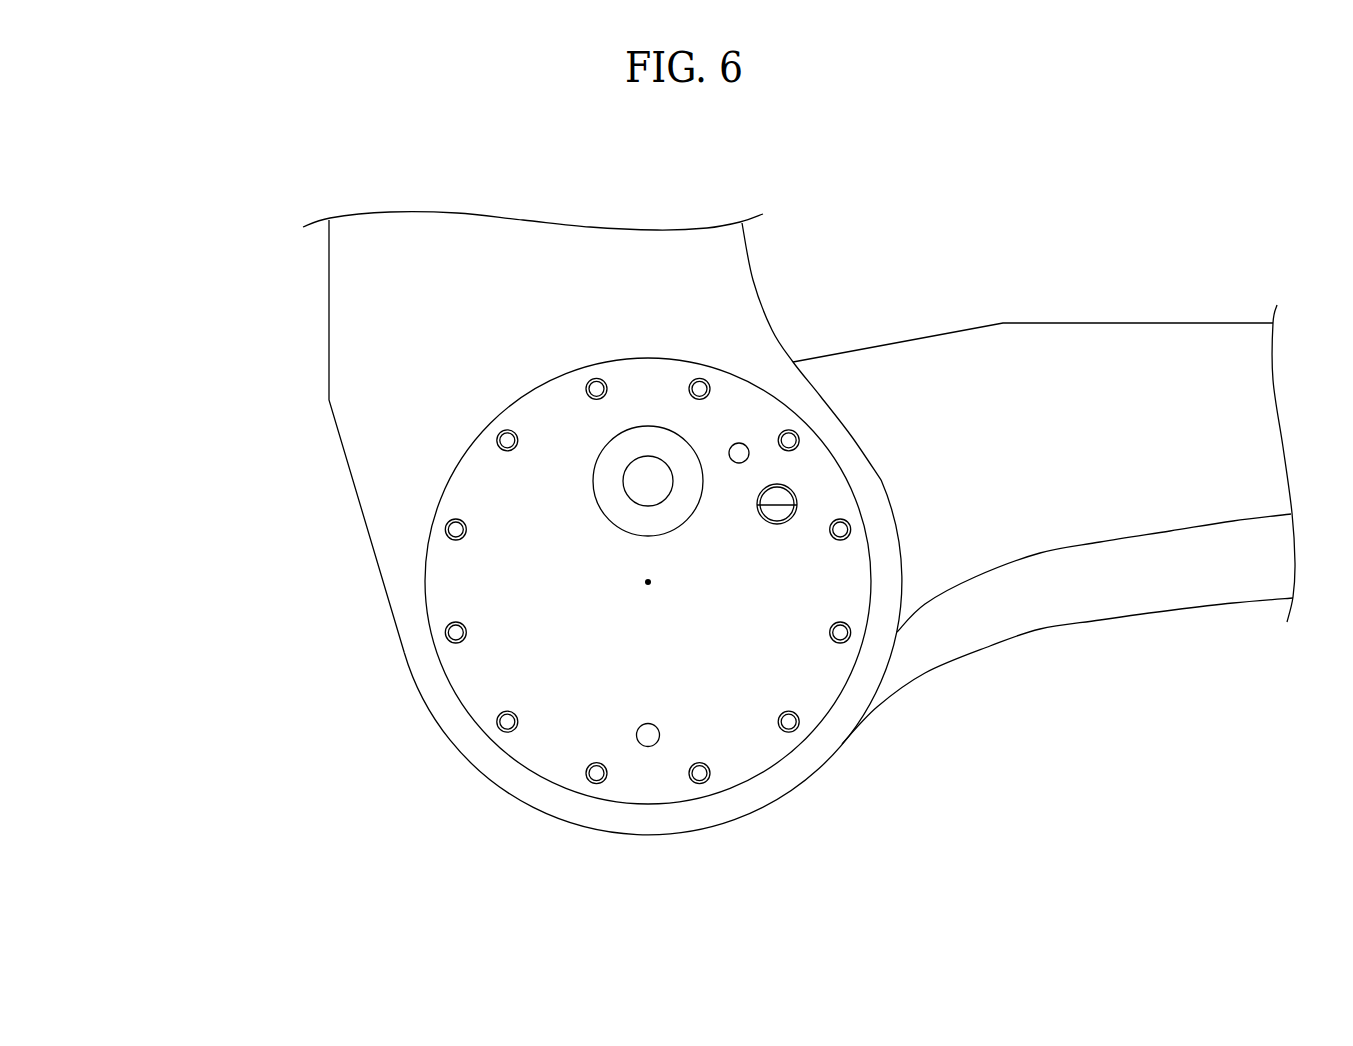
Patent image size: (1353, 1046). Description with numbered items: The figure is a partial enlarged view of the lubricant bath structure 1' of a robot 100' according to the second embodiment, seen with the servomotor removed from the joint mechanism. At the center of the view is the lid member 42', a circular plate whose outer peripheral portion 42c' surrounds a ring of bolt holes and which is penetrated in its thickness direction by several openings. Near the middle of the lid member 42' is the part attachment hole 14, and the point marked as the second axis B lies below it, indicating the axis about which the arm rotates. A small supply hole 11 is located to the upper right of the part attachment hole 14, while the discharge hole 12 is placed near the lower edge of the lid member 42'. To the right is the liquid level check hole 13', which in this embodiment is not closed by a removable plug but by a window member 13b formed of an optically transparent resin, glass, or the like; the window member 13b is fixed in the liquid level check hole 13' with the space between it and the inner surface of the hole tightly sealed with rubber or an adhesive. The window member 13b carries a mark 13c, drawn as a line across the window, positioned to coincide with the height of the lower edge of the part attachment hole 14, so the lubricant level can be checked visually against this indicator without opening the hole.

The robot 100' is at (493, 388).
The lubricant bath structure 1' is at (746, 498).
The lid member 42' is at (648, 603).
The outer peripheral portion of flange 42c' is at (594, 657).
The part attachment hole 14 is at (648, 470).
The supply hole 11 is at (741, 447).
The discharge hole 12 is at (652, 747).
The liquid level check hole 13' is at (838, 471).
The window member 13b is at (782, 517).
The mark (indicator) 13c is at (765, 518).
The second axis B is at (648, 602).